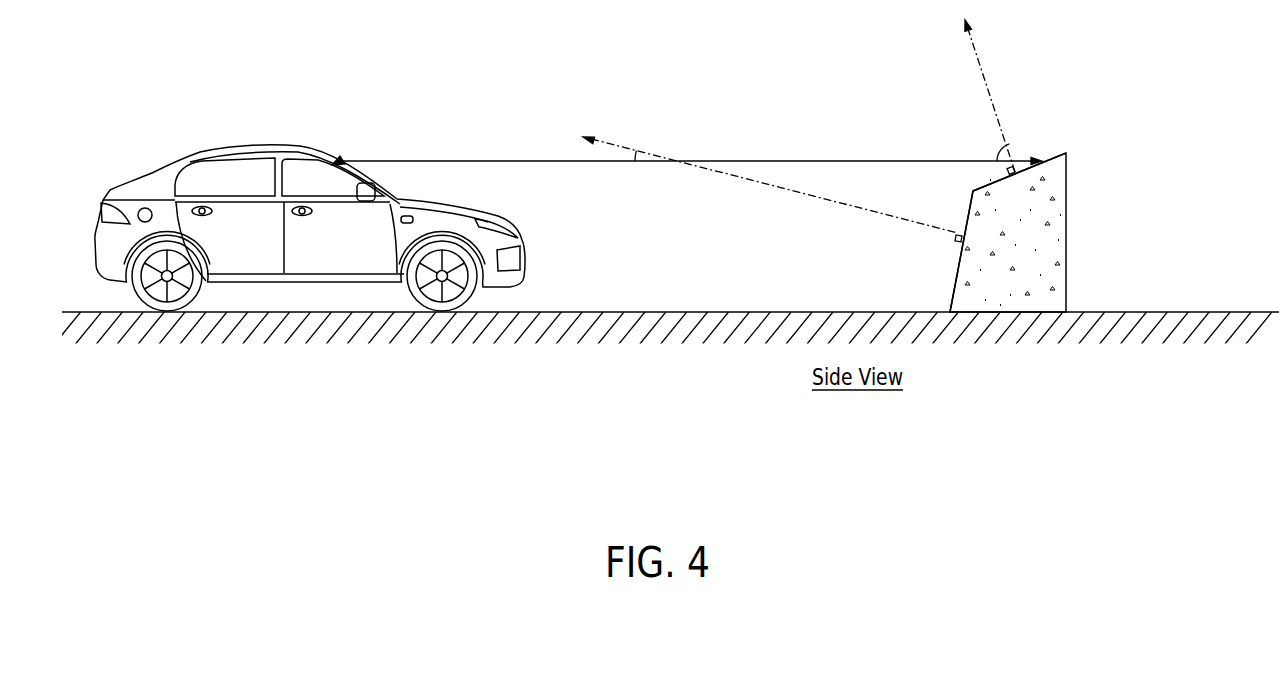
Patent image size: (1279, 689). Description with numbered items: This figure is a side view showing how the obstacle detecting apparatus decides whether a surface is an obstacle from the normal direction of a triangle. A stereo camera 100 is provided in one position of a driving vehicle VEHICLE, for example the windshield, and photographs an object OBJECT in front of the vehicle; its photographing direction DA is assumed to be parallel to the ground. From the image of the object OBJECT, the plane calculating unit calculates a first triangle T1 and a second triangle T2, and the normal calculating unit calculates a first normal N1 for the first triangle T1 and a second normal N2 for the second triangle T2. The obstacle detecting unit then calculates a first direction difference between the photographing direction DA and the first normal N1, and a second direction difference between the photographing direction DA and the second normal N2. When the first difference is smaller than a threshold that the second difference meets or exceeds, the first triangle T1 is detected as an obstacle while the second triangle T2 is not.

The stereo camera 100 is at (334, 158).
The driving vehicle VEHICLE is at (238, 167).
The photographing direction DA is at (480, 160).
The first normal N1 is at (777, 187).
The second normal N2 is at (982, 63).
The first triangle T1 is at (960, 273).
The second triangle T2 is at (1053, 153).
The object OBJECT is at (1047, 207).